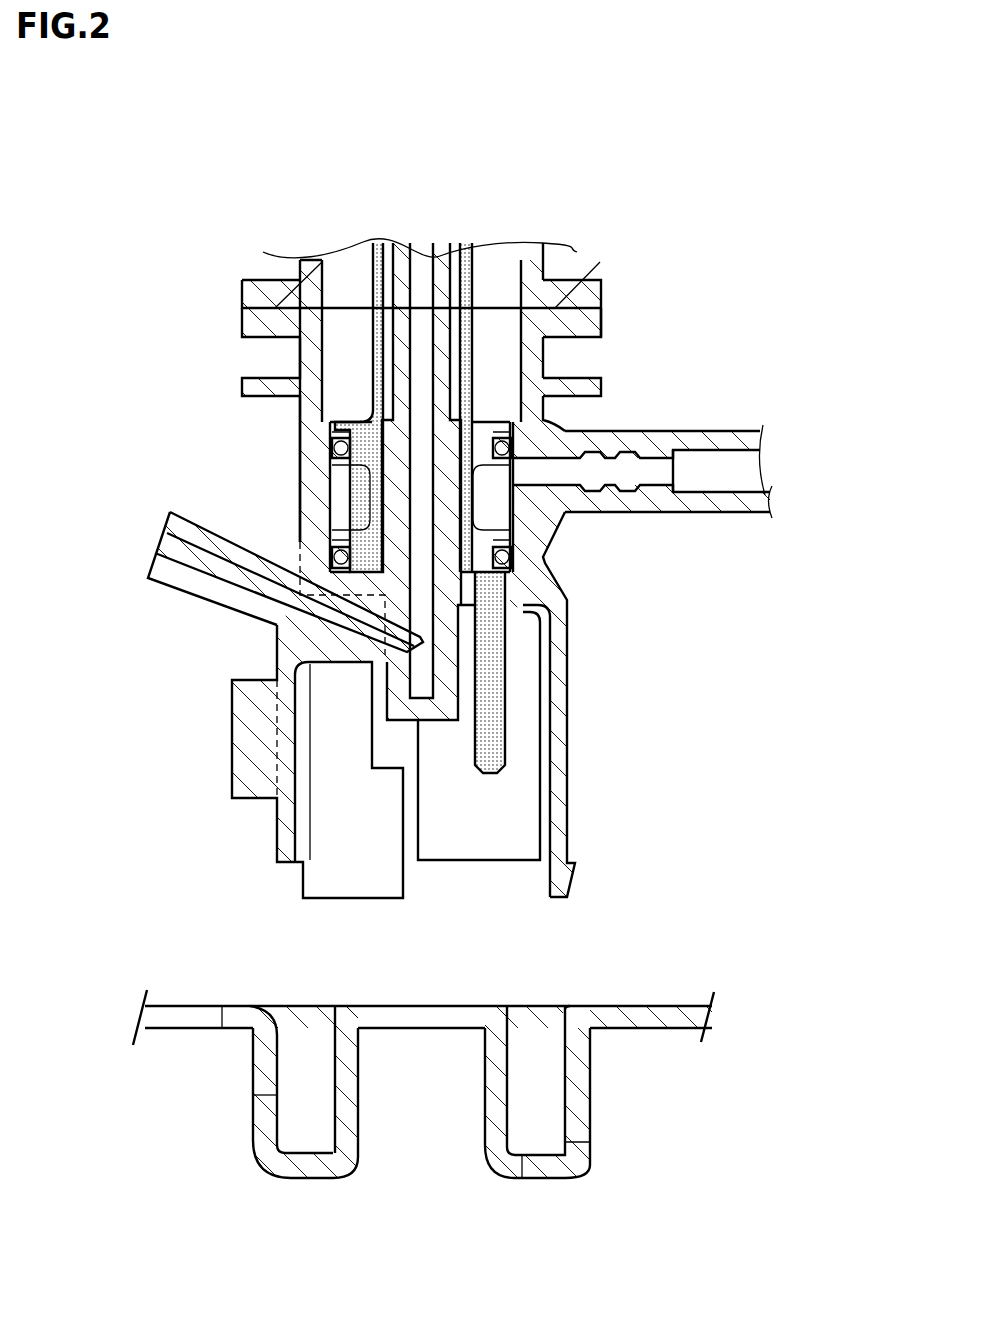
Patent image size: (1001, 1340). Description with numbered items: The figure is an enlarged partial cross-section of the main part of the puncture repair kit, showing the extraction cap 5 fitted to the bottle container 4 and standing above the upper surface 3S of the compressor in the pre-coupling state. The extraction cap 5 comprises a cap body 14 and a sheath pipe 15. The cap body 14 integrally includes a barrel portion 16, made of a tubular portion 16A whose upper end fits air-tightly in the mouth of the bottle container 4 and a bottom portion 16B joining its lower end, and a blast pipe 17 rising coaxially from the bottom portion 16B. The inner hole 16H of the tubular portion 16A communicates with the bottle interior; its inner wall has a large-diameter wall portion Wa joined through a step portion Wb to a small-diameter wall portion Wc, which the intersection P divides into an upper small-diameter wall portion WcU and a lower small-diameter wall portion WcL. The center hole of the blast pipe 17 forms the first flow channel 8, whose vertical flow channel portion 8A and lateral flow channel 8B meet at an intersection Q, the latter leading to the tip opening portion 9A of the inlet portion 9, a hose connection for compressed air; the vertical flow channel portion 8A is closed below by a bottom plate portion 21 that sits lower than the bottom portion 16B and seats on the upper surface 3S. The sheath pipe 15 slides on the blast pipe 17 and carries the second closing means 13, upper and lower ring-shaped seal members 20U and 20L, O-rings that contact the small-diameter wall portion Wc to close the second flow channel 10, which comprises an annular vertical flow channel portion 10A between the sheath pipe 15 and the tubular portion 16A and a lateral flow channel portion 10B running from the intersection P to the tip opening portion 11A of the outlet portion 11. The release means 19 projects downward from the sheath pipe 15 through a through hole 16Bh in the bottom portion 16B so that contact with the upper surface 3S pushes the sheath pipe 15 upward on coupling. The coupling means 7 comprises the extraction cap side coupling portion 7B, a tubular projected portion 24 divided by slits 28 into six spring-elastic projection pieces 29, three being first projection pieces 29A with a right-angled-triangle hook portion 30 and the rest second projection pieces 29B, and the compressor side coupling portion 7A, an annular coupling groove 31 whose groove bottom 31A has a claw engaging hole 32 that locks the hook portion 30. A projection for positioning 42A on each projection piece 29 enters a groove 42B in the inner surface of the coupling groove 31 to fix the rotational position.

The upper surface of the compressor 3S is at (648, 1005).
The bottle container 4 is at (273, 292).
The extraction cap 5 is at (657, 303).
The coupling means 7 is at (60, 925).
The compressor side coupling portion 7A is at (245, 1122).
The extraction cap side coupling portion 7B is at (262, 850).
The first flow channel 8 is at (98, 592).
The vertical flow channel portion 8A is at (398, 654).
The lateral flow channel 8B is at (257, 578).
The inlet portion 9 is at (152, 566).
The tip opening portion of the inlet portion 9A is at (228, 560).
The second flow channel 10 is at (780, 340).
The annular vertical flow channel portion 10A is at (520, 385).
The lateral flow channel portion 10B is at (560, 470).
The outlet portion 11 is at (668, 512).
The tip opening portion of the outlet portion 11A is at (673, 470).
The second closing means 13 is at (330, 448).
The cap body 14 is at (85, 350).
The sheath pipe 15 is at (380, 300).
The barrel portion 16 is at (132, 462).
The tubular portion 16A is at (320, 488).
The bottom portion 16B is at (357, 582).
The through hole 16Bh is at (508, 688).
The inner hole 16H is at (478, 465).
The blast pipe 17 is at (402, 377).
The release means 19 is at (500, 735).
The upper seal member 20U is at (332, 442).
The lower seal member 20L is at (332, 552).
The bottom plate portion 21 is at (562, 760).
The tubular projected portion 24 is at (617, 840).
The slit 28 is at (407, 840).
The projection piece 29 is at (277, 817).
The first projection piece 29A is at (348, 877).
The second projection piece 29B is at (487, 853).
The hook portion 30 is at (575, 878).
The coupling groove 31 is at (563, 1060).
The groove bottom 31A is at (530, 1153).
The claw engaging hole 32 is at (577, 1140).
The projection for positioning 42A is at (232, 760).
The engaging recess 42B is at (268, 1055).
The intersection P is at (520, 478).
The intersection Q is at (400, 652).
The large-diameter wall portion Wa is at (478, 300).
The step portion Wb is at (545, 405).
The small-diameter wall portion Wc is at (680, 535).
The lower small-diameter wall portion WcL is at (545, 495).
The upper small-diameter wall portion WcU is at (548, 560).